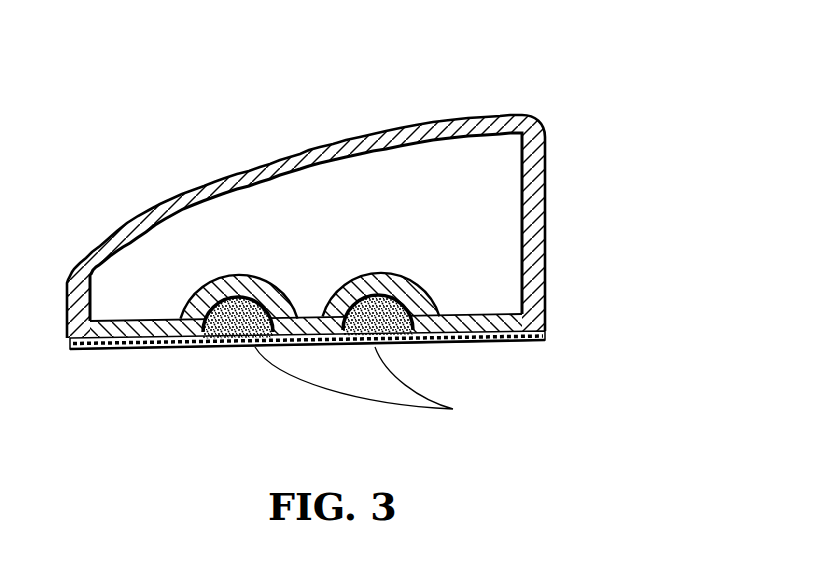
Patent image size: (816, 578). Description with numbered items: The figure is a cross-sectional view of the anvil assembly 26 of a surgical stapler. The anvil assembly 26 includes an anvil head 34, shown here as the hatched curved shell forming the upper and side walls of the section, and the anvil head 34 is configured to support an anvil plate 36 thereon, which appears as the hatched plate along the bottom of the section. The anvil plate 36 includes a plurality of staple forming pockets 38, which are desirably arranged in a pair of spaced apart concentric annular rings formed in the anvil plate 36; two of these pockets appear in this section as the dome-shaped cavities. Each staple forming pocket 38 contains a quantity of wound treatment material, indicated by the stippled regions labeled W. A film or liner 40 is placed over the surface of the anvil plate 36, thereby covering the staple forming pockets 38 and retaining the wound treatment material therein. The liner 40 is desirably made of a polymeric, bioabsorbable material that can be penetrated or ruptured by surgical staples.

The anvil assembly 26 is at (307, 219).
The anvil head 34 is at (258, 166).
The anvil plate 36 is at (319, 283).
The staple forming pockets 38 is at (367, 275).
The liner 40 is at (132, 348).